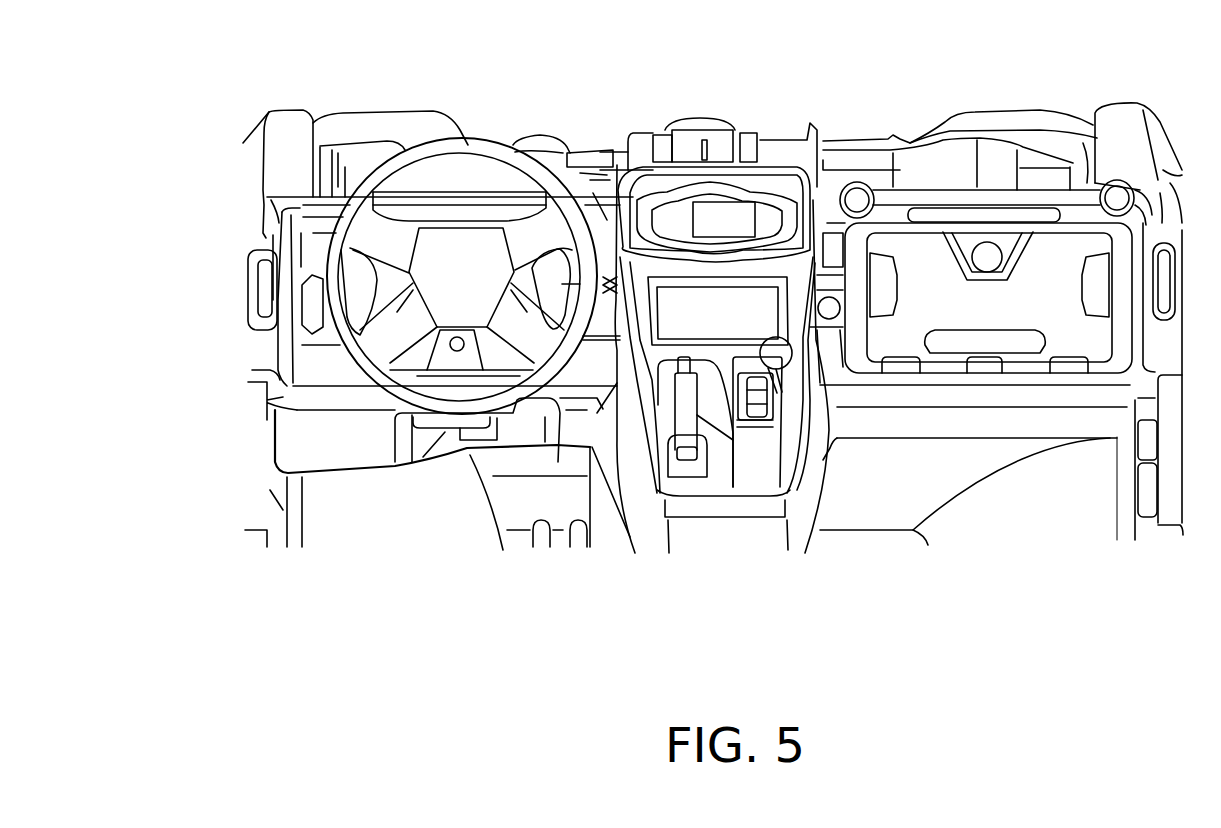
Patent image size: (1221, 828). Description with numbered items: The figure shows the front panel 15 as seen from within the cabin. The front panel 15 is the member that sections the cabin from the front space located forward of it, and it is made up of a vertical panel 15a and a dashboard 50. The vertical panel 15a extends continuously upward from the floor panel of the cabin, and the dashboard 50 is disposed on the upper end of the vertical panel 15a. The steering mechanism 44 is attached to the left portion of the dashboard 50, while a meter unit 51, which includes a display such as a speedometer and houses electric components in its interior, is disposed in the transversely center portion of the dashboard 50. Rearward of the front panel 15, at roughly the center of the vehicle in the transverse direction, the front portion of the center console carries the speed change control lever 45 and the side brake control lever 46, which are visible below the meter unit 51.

The front panel 15 is at (218, 356).
The vertical panel 15a is at (313, 436).
The steering mechanism 44 is at (459, 152).
The speed change control lever 45 is at (777, 362).
The side brake control lever 46 is at (687, 407).
The dashboard 50 is at (264, 232).
The meter unit 51 is at (713, 197).